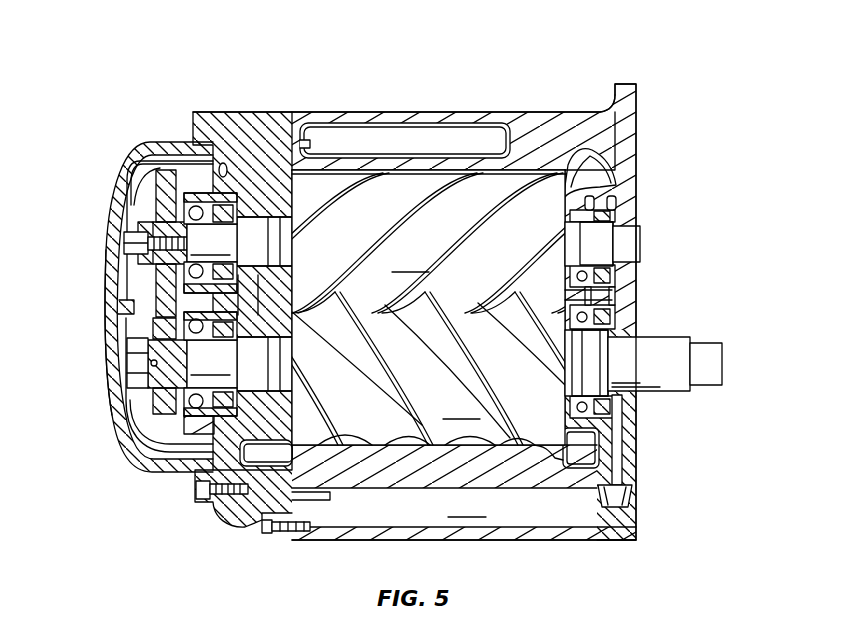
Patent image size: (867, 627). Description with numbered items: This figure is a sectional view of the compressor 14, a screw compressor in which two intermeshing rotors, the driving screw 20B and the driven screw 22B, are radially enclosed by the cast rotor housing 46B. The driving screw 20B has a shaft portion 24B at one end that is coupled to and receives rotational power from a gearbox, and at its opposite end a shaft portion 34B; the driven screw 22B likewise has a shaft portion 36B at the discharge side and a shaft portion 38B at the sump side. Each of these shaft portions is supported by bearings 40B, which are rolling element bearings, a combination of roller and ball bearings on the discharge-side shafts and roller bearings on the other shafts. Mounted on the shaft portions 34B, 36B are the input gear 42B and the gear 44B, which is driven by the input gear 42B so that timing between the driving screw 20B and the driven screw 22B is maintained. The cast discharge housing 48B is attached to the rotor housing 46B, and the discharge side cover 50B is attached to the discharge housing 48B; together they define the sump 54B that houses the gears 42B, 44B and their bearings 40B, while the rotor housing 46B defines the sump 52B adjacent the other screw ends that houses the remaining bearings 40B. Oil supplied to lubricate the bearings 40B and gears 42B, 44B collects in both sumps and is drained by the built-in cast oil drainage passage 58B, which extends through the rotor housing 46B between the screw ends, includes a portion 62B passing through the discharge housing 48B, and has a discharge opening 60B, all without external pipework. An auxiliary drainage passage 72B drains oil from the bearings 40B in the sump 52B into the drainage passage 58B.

The compressor 14 is at (719, 54).
The driving screw 20B is at (429, 307).
The driven screw 22B is at (470, 307).
The shaft portion 24B is at (665, 338).
The shaft portion 34B is at (209, 364).
The shaft portion 36B is at (208, 241).
The shaft portion 38B is at (645, 240).
The bearings 40B is at (187, 100).
The input gear 42B is at (128, 464).
The gear 44B is at (160, 205).
The cast rotor housing 46B is at (492, 112).
The cast discharge housing 48B is at (250, 112).
The discharge side cover 50B is at (105, 372).
The sump 52B is at (714, 221).
The sump 54B is at (130, 282).
The built-in cast oil drainage passage 58B is at (464, 492).
The discharge opening 60B is at (638, 500).
The portion of drainage passage 62B is at (262, 497).
The auxiliary drainage passage 72B is at (620, 466).